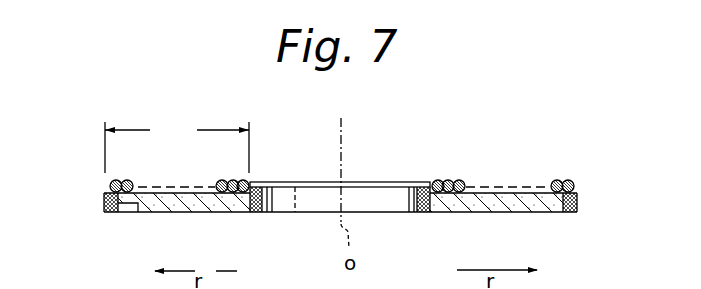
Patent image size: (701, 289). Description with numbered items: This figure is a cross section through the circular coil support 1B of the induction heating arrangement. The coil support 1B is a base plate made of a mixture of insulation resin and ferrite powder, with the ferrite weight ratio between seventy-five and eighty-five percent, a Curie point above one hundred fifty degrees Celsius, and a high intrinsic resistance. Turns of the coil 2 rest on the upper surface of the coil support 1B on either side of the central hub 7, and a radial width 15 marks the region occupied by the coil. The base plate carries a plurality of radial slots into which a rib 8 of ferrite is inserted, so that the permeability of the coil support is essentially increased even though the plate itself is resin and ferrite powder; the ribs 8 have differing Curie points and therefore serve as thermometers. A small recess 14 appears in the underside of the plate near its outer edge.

The coil support 1B is at (578, 197).
The coil 2 is at (108, 182).
The hub 7 is at (401, 198).
The rib 8 is at (184, 213).
The recess 14 is at (137, 213).
The radial width dimension 15 is at (177, 144).